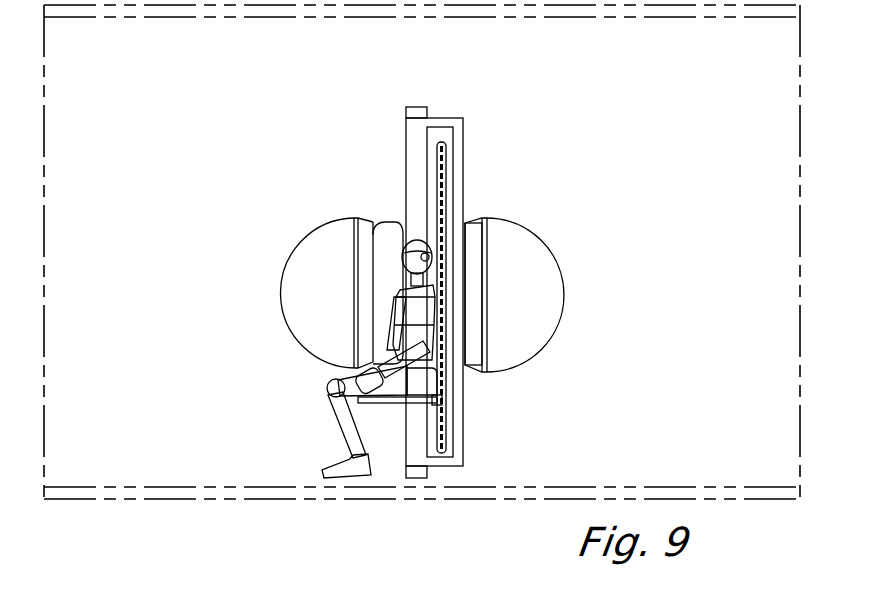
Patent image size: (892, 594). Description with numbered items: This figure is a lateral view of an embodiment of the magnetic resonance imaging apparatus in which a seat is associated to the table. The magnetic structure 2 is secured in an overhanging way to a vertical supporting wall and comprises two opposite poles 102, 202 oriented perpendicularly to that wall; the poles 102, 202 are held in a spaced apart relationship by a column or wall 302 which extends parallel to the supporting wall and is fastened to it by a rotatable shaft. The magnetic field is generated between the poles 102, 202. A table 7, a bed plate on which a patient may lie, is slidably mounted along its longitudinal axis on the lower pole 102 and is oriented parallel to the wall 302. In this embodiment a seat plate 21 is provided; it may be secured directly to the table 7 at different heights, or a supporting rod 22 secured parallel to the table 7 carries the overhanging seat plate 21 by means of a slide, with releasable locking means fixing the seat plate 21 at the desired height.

The supporting rod 22 is at (417, 138).
The table 7 is at (446, 172).
The seat plate 21 is at (410, 400).
The magnetic structure 2 is at (493, 318).
The pole 102 is at (323, 283).
The pole 202 is at (512, 260).
The column or wall 302 is at (392, 243).